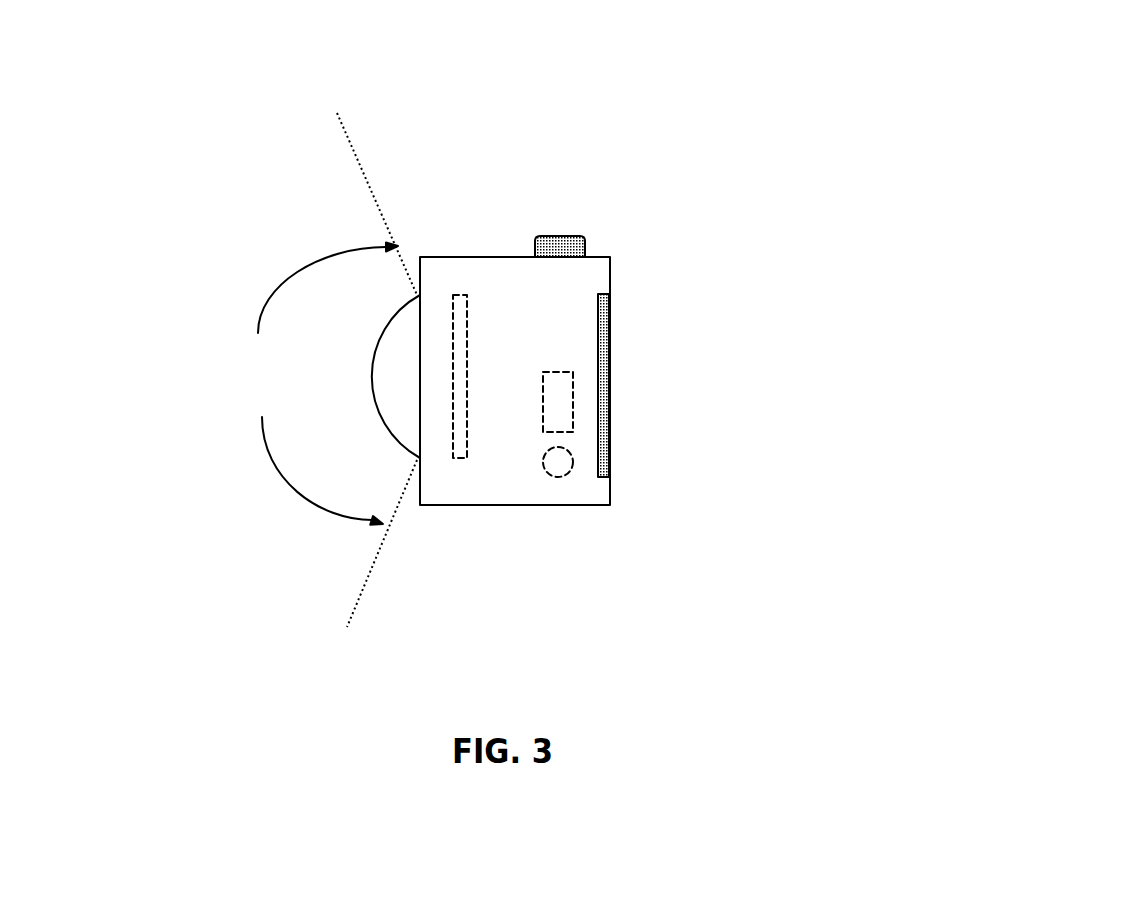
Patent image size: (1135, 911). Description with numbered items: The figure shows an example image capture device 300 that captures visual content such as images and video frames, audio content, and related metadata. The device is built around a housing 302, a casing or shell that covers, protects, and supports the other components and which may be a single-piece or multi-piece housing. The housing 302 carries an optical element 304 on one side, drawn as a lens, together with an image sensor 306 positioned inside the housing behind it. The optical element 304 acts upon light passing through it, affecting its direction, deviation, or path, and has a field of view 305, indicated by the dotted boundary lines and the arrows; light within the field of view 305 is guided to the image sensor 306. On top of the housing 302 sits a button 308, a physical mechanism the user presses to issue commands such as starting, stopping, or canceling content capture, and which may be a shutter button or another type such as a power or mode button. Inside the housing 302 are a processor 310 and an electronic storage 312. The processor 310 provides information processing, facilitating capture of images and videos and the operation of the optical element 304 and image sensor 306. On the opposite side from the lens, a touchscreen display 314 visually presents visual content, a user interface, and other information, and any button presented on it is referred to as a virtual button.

The image capture device 300 is at (575, 126).
The housing 302 is at (483, 507).
The optical element 304 is at (393, 448).
The field of view 305 is at (292, 370).
The image sensor 306 is at (460, 293).
The button 308 is at (585, 238).
The processor 310 is at (565, 476).
The electronic storage 312 is at (573, 413).
The touchscreen display 314 is at (612, 382).